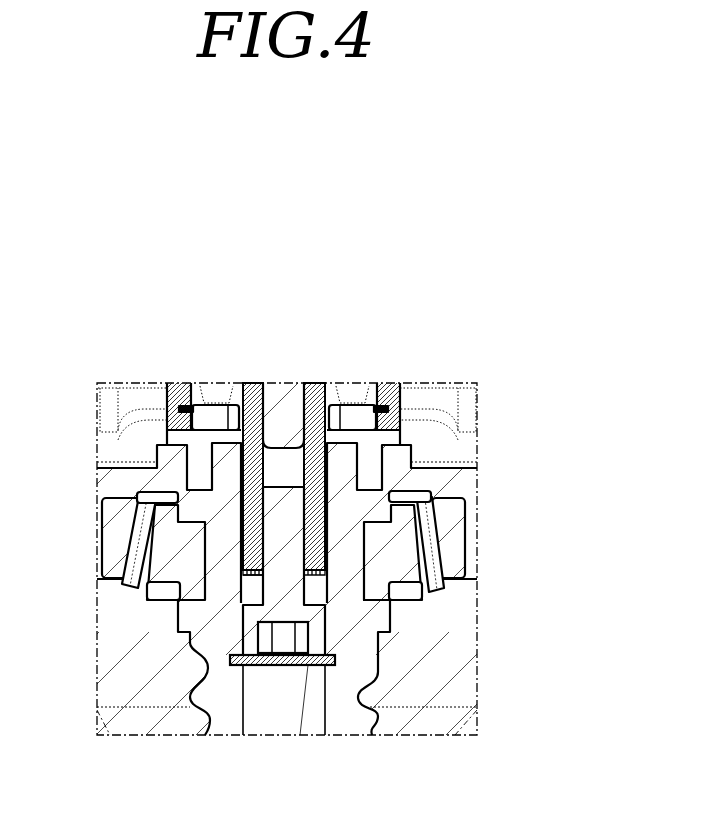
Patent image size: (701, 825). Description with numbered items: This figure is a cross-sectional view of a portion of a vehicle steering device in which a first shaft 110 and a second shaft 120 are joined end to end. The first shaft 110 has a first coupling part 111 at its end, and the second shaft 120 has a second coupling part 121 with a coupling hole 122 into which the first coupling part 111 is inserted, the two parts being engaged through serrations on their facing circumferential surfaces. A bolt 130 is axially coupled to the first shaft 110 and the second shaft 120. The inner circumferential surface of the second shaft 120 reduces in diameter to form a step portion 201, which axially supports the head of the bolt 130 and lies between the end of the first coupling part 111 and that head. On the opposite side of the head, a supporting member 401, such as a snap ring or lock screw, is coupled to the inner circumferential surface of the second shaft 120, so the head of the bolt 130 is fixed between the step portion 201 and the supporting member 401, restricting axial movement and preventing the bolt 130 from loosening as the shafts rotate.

The first shaft 110 is at (316, 385).
The first coupling part 111 is at (331, 470).
The second shaft 120 is at (224, 735).
The second coupling part 121 is at (345, 513).
The coupling hole 122 is at (257, 522).
The bolt 130 is at (292, 587).
The step portion 201 is at (258, 588).
The supporting member 401 is at (304, 735).